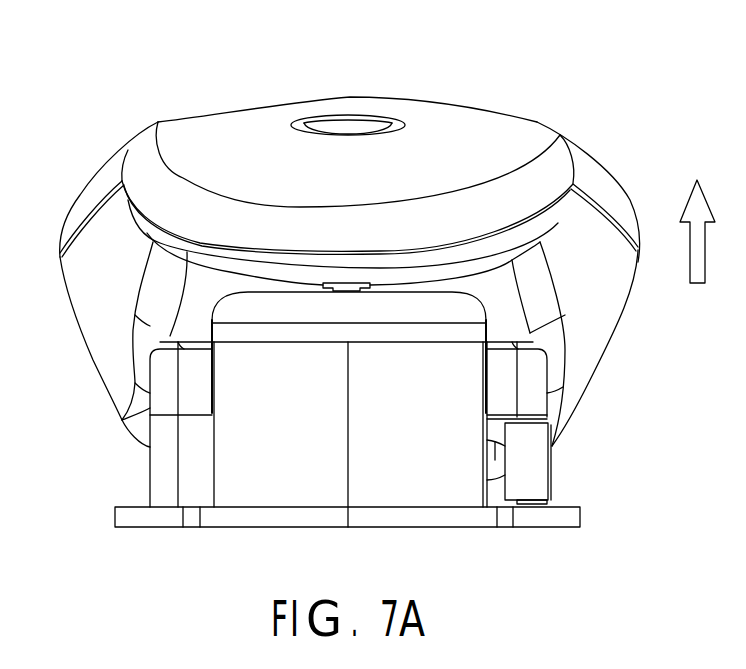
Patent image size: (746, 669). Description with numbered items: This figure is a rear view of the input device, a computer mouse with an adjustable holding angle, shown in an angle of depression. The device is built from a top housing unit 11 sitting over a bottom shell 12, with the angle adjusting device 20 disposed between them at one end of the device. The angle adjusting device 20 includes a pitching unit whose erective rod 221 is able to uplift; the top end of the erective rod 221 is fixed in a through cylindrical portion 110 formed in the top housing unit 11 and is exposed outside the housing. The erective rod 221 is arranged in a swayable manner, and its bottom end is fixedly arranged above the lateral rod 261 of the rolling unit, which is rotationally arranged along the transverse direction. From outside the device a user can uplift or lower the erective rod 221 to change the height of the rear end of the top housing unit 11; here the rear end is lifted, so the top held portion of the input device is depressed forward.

The top housing unit 11 is at (466, 107).
The cylindrical portion 110 is at (352, 127).
The bottom shell 12 is at (572, 517).
The angle adjusting device 20 is at (147, 480).
The erective rod 221 is at (347, 288).
The lateral rod 261 is at (533, 468).